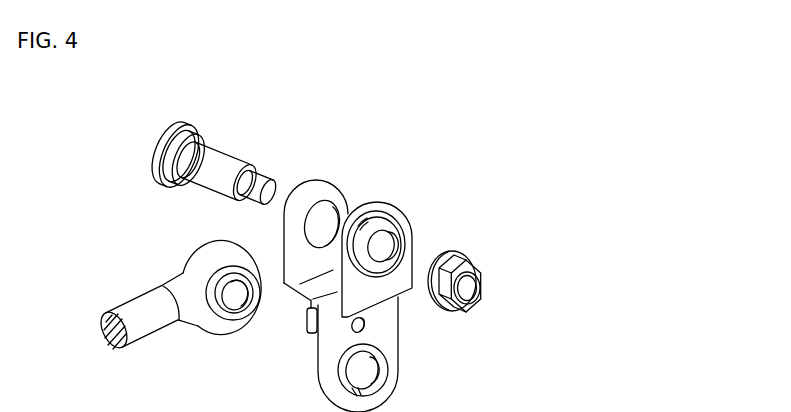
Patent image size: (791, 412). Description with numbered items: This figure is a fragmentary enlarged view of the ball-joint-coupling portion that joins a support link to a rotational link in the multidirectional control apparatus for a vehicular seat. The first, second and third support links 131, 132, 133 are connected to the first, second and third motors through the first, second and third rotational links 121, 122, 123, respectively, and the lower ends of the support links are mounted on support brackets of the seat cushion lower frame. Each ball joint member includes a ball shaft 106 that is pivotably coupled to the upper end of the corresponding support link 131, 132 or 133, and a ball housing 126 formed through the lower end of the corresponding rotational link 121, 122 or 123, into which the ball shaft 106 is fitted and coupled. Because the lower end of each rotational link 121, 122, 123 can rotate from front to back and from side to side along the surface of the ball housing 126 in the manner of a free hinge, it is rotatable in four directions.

The ball shaft 106 is at (227, 168).
The first rotational link 121 is at (142, 308).
The second rotational link 122 is at (211, 337).
The third rotational link 123 is at (212, 324).
The ball housing 126 is at (207, 302).
The first support link 131 is at (461, 296).
The second support link 132 is at (376, 244).
The third support link 133 is at (385, 327).